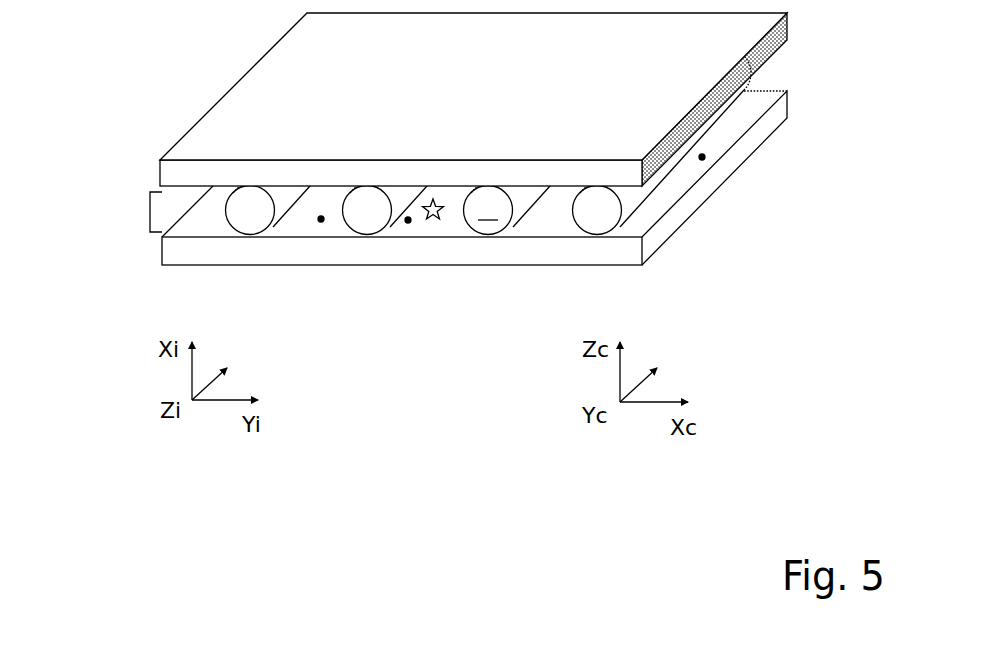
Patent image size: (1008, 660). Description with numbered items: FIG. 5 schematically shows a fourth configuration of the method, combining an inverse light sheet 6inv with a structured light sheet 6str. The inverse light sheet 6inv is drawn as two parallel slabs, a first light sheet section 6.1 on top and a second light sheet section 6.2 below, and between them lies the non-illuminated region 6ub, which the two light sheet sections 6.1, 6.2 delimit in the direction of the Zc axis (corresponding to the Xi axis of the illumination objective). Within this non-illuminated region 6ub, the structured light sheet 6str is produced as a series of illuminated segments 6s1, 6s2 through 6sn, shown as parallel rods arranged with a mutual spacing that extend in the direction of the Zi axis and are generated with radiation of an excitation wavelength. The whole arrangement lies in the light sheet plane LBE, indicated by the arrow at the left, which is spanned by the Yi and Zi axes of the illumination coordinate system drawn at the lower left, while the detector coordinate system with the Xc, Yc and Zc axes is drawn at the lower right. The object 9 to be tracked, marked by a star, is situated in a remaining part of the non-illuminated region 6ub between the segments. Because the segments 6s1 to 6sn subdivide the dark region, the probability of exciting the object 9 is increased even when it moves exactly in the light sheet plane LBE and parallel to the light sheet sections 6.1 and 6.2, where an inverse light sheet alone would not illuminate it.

The first light sheet section 6.1 is at (770, 45).
The second light sheet section 6.2 is at (660, 230).
The inverse light sheet 6inv is at (477, 157).
The structured light sheet 6str is at (148, 210).
The illuminated segment 6s1 is at (233, 220).
The illuminated segment 6s2 is at (350, 220).
The illuminated segment 6sn is at (580, 220).
The non-illuminated region 6ub is at (408, 220).
The object 9 is at (430, 222).
The light sheet plane LBE is at (113, 210).